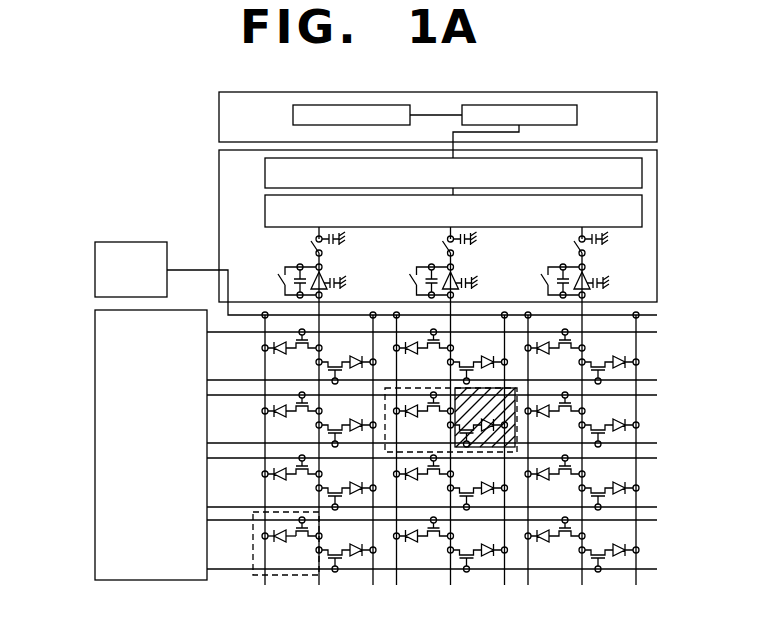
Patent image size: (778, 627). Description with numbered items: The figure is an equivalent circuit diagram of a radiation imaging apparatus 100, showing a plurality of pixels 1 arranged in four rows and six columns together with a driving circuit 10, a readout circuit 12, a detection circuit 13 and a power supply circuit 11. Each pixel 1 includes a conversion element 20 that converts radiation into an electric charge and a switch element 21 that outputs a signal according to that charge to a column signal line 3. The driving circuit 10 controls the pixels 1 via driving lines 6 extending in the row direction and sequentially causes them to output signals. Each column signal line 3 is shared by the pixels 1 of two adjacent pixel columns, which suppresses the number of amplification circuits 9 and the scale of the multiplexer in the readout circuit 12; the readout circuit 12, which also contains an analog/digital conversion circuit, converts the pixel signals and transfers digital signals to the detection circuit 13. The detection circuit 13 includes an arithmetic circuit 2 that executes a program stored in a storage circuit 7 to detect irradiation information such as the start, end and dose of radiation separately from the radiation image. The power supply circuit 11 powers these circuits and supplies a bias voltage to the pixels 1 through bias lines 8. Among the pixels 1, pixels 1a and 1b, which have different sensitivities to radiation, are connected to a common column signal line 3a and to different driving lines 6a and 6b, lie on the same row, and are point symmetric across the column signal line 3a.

The radiation imaging apparatus 100 is at (158, 147).
The pixel 1 is at (299, 538).
The pixel 1a is at (400, 387).
The pixel 1b is at (516, 432).
The arithmetic circuit 2 is at (579, 115).
The column signal line 3 is at (320, 577).
The column signal line 3a is at (451, 576).
The driving line 6 is at (657, 520).
The driving line 6a is at (657, 394).
The driving line 6b is at (657, 443).
The storage circuit 7 is at (292, 116).
The bias line 8 is at (657, 570).
The amplification circuit 9 is at (595, 270).
The driving circuit 10 is at (95, 515).
The power supply circuit 11 is at (95, 271).
The readout circuit 12 is at (657, 180).
The detection circuit 13 is at (657, 116).
The conversion element 20 is at (282, 532).
The switch element 21 is at (303, 545).